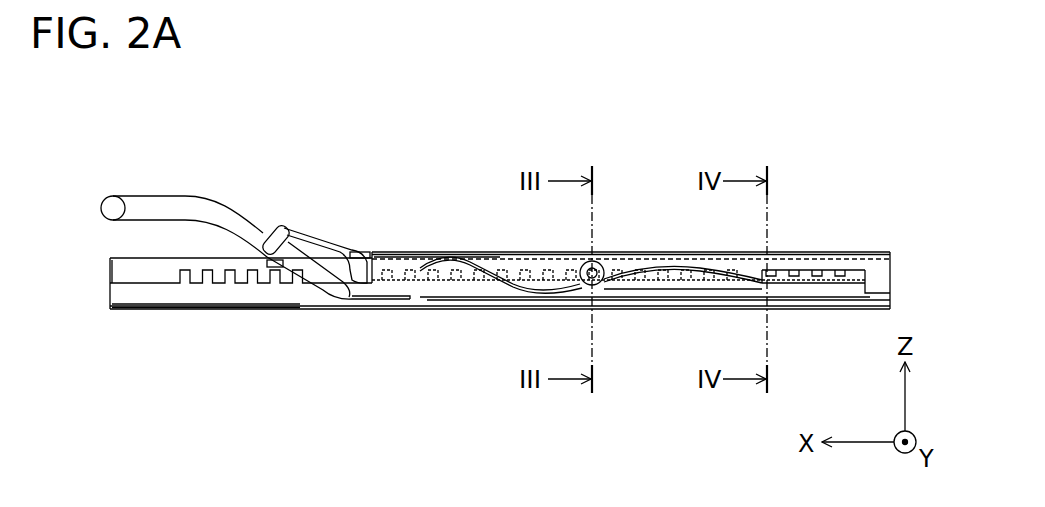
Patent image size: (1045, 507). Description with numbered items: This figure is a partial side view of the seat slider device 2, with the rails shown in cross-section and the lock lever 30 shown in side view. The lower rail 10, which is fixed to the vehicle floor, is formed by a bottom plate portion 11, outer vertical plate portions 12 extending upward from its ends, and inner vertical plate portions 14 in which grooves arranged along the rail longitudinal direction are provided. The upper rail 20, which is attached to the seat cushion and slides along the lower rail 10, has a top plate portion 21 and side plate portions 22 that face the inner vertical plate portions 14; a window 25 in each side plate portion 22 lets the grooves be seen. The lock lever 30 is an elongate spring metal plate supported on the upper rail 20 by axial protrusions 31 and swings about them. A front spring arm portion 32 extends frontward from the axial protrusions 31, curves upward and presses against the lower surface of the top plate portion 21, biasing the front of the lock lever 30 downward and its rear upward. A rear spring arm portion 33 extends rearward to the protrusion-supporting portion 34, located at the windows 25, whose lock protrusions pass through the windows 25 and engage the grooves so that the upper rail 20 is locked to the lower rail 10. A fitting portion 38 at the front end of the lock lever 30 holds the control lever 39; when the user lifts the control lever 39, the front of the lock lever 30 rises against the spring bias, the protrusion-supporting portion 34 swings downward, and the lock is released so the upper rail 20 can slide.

The seat slider device 2 is at (102, 158).
The lower rail 10 is at (107, 292).
The bottom plate portion 11 is at (205, 309).
The outer vertical plate portion 12 is at (164, 302).
The inner vertical plate portion 14 is at (130, 290).
The upper rail 20 is at (831, 237).
The top plate portion 21 is at (394, 250).
The side plate portion 22 is at (660, 262).
The window 25 is at (857, 300).
The lock lever 30 is at (348, 221).
The axial protrusions 31 is at (598, 262).
The front spring arm portion 32 is at (468, 258).
The rear spring arm portion 33 is at (693, 295).
The protrusion-supporting portion 34 is at (816, 296).
The fitting portion 38 is at (283, 225).
The control lever 39 is at (194, 200).